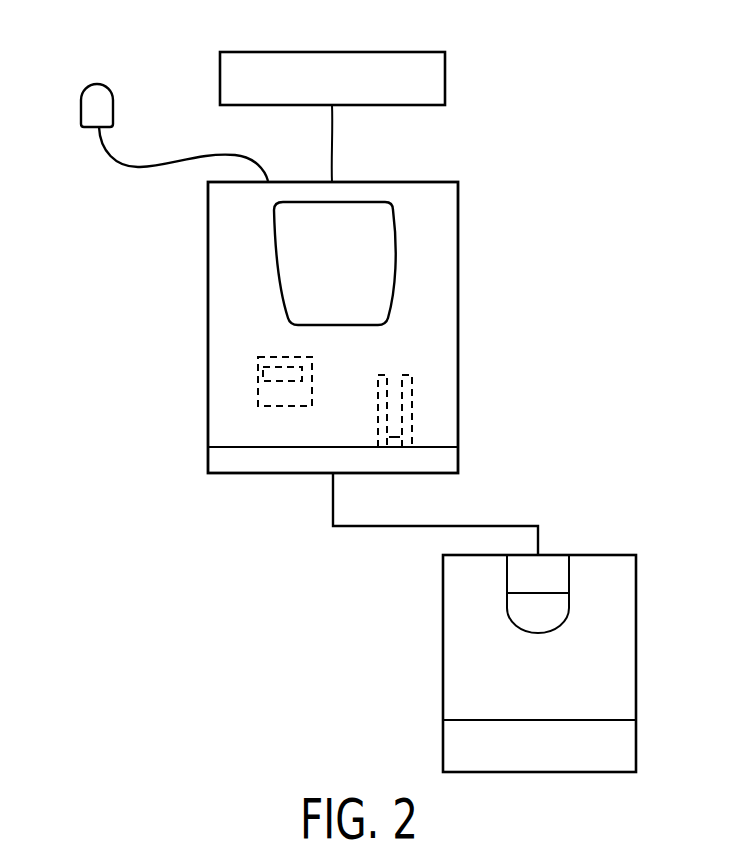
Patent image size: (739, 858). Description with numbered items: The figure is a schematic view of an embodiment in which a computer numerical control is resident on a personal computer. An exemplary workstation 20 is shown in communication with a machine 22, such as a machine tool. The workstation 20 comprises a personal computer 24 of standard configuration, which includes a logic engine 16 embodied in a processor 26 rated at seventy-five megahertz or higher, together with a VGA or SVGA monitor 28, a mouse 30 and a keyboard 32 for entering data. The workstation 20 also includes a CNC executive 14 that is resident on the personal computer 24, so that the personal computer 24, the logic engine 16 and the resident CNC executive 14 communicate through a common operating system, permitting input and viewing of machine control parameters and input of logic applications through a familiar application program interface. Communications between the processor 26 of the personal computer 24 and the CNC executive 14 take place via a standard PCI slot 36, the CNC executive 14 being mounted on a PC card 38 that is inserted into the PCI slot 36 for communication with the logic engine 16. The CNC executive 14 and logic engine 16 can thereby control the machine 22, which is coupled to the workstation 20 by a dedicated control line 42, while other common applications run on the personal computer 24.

The CNC executive 14 is at (398, 347).
The logic engine 16 is at (258, 370).
The workstation 20 is at (500, 164).
The machine 22 is at (639, 613).
The personal computer 24 is at (130, 268).
The processor 26 is at (259, 378).
The monitor 28 is at (383, 228).
The mouse 30 is at (97, 98).
The keyboard 32 is at (334, 52).
The PCI slot 36 is at (375, 407).
The PC card 38 is at (396, 397).
The dedicated control line 42 is at (436, 525).